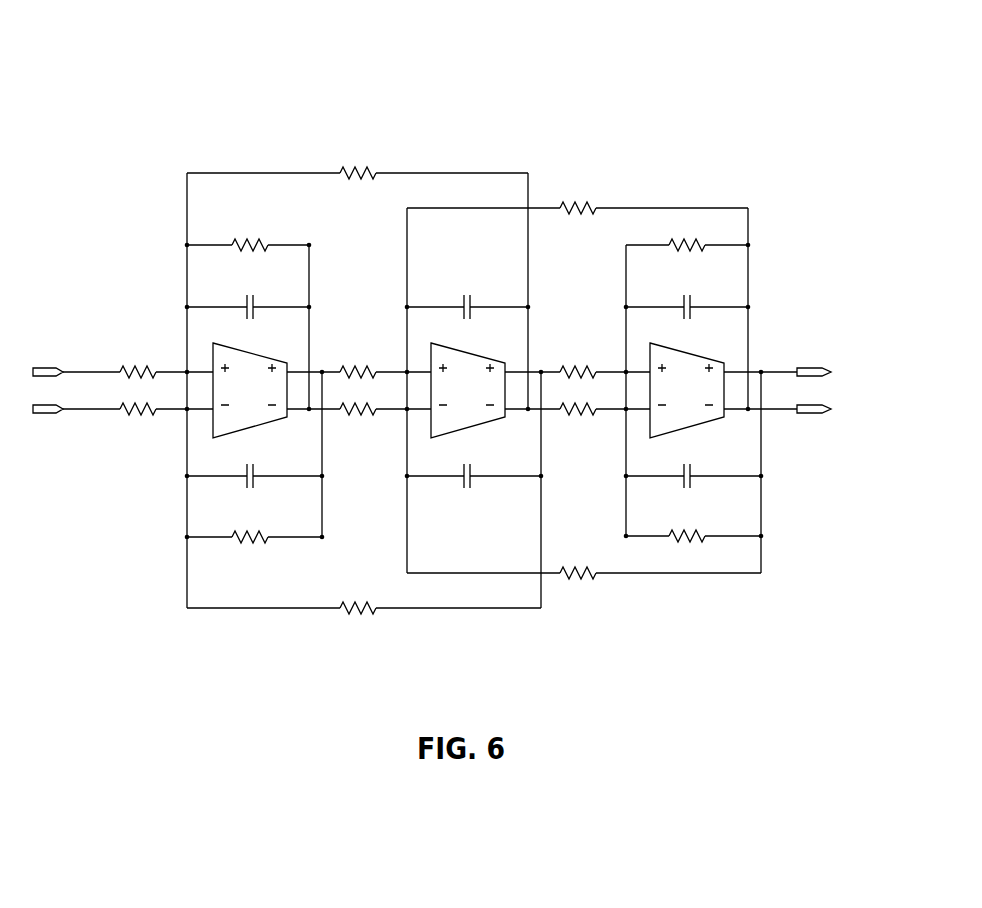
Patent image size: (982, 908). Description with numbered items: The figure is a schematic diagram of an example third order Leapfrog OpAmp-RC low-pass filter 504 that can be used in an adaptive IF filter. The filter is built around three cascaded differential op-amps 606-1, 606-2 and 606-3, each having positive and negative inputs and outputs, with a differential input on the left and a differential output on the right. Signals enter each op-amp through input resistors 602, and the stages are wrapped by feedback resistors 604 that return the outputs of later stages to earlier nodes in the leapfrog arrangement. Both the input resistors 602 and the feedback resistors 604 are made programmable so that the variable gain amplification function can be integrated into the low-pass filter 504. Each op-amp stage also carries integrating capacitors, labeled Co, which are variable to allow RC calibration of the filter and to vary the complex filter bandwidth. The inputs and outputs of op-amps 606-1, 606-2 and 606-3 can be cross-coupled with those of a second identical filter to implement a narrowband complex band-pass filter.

The low-pass filter 504 is at (150, 75).
The input resistors 602 is at (343, 358).
The feedback resistors 604 is at (678, 225).
The op-amp 606-1 is at (207, 422).
The op-amp 606-2 is at (446, 337).
The op-amp 606-3 is at (695, 348).